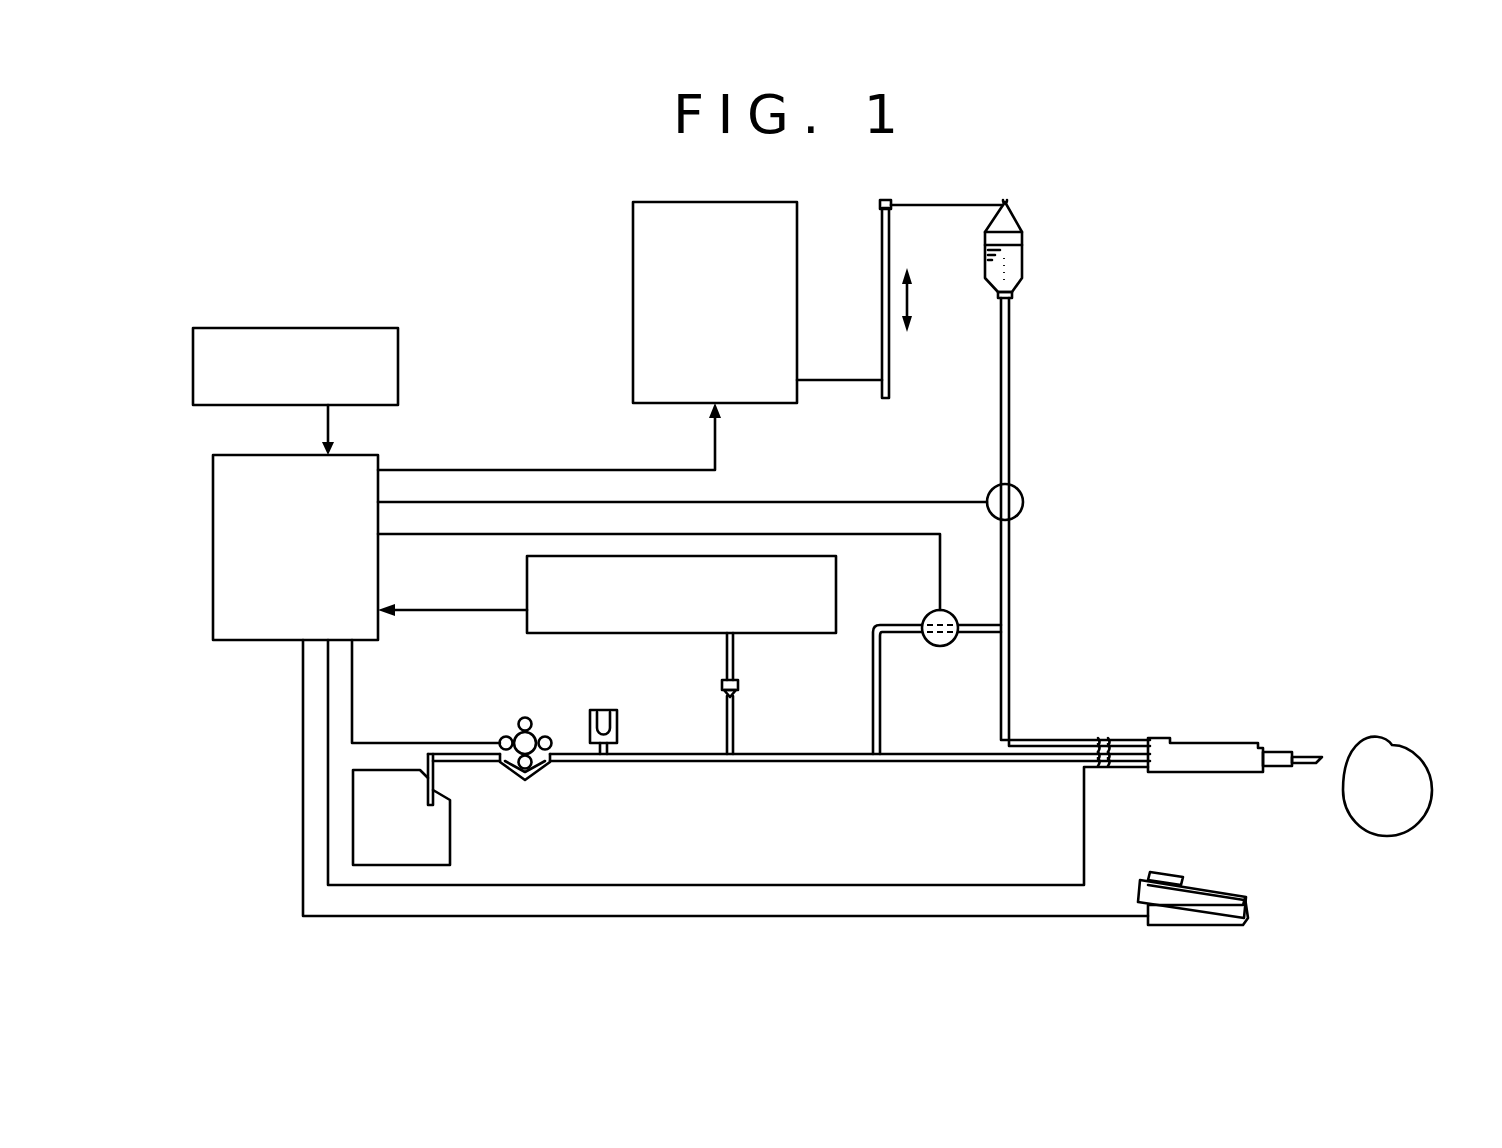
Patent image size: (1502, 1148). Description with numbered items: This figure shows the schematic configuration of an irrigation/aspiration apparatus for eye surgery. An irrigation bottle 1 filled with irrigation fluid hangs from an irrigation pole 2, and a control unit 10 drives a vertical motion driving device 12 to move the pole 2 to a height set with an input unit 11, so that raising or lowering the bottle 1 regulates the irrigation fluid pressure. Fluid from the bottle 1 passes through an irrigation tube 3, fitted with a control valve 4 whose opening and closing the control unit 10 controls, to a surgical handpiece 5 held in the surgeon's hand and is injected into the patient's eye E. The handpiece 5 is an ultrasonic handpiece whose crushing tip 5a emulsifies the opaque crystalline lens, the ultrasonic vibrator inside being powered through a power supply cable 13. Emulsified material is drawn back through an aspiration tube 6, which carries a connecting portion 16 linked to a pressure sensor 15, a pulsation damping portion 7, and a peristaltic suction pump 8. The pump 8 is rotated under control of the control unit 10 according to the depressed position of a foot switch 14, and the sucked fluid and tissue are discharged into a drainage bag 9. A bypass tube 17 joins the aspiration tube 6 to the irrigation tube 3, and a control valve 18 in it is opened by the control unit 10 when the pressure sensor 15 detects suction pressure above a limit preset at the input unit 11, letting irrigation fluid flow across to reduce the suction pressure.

The irrigation bottle 1 is at (1022, 265).
The irrigation pole 2 is at (882, 285).
The irrigation tube 3 is at (1009, 378).
The control valve 4 is at (1022, 495).
The surgical handpiece 5 is at (1230, 760).
The crushing tip 5a is at (1308, 757).
The aspiration tube 6 is at (935, 752).
The pulsation damping portion 7 is at (635, 713).
The peristaltic suction pump 8 is at (500, 713).
The drainage bag 9 is at (430, 835).
The control unit 10 is at (225, 632).
The input unit 11 is at (193, 380).
The vertical motion driving device 12 is at (633, 380).
The power supply cable 13 is at (787, 884).
The foot switch 14 is at (1205, 917).
The pressure sensor 15 is at (527, 580).
The connecting portion 16 is at (740, 688).
The bypass tube 17 is at (873, 720).
The control valve 18 is at (930, 613).
The patient's eye E is at (1420, 792).